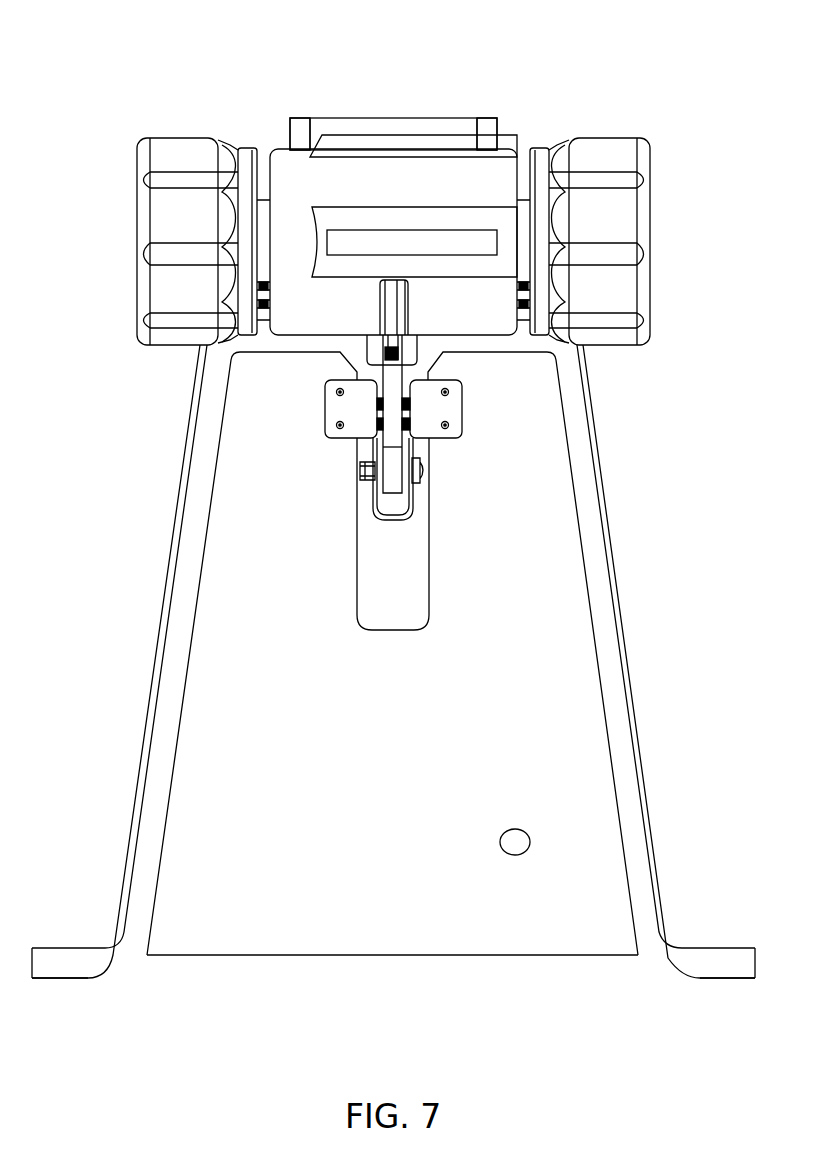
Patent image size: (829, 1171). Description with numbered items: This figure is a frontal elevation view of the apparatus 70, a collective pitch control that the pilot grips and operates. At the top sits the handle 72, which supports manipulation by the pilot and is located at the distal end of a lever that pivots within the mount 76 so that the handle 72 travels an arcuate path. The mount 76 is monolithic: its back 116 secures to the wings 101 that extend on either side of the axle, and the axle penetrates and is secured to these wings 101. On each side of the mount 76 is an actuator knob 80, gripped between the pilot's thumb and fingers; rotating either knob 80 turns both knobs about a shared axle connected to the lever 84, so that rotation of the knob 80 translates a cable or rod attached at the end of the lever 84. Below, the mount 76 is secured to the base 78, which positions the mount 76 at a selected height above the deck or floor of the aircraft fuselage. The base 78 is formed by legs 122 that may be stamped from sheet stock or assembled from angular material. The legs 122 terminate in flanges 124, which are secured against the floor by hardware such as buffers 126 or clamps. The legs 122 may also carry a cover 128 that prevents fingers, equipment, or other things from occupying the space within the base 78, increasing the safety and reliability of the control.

The apparatus 70 is at (147, 55).
The handle 72 is at (521, 137).
The mount 76 is at (498, 115).
The base 78 is at (410, 681).
The actuator knob 80 is at (160, 208).
The lever 84 is at (393, 346).
The wings 101 is at (290, 128).
The back 116 is at (392, 128).
The legs 122 is at (168, 622).
The flanges 124 is at (60, 982).
The buffers 126 is at (65, 958).
The cover 128 is at (617, 699).